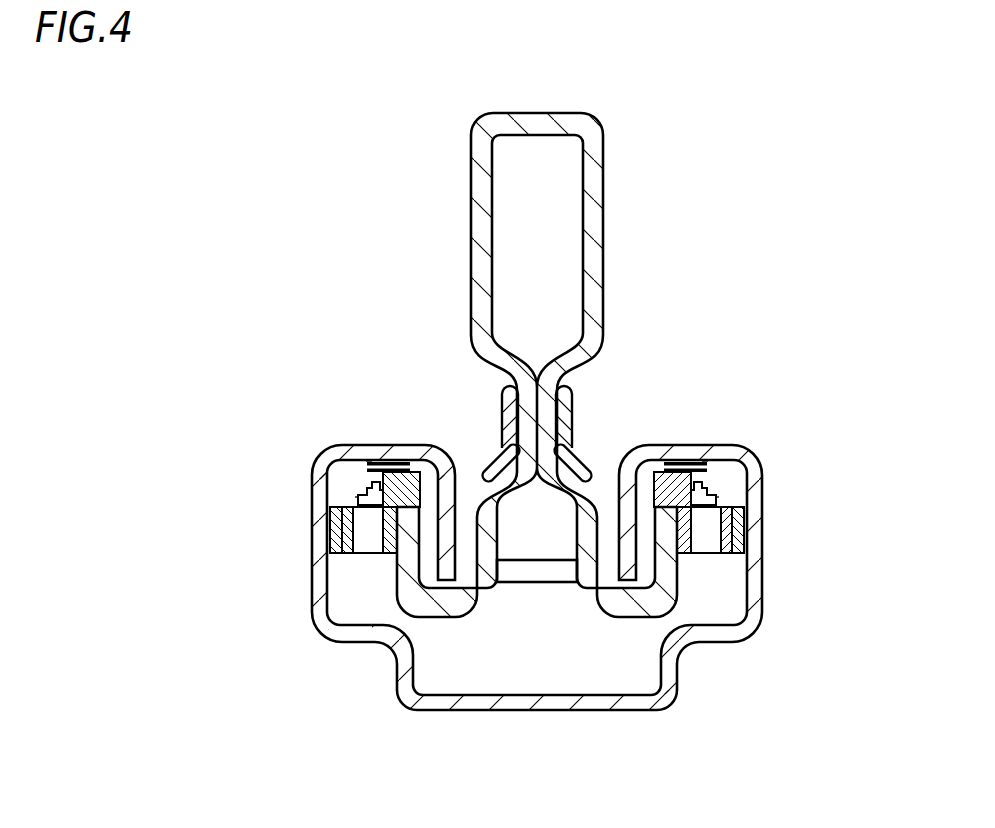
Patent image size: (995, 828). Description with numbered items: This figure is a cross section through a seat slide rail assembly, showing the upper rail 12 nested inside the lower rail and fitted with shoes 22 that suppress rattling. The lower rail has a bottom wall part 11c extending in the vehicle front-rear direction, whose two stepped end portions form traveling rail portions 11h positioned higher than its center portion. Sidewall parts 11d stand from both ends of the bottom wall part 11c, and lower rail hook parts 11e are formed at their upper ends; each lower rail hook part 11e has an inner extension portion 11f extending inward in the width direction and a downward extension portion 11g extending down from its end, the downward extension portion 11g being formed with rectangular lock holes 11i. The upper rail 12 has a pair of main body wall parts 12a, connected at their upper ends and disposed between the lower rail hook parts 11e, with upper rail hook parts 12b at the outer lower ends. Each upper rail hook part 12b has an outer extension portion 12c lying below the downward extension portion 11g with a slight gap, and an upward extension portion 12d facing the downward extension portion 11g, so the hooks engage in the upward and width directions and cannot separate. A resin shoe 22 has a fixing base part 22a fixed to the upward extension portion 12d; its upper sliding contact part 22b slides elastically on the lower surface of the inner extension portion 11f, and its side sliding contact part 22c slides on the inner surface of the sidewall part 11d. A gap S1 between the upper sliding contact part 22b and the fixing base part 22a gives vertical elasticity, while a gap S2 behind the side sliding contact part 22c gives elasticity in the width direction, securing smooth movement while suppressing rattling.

The upper rail 12 is at (606, 132).
The main body wall part 12a is at (604, 183).
The upper rail hook part 12b is at (415, 621).
The outer extension portion 12c is at (457, 621).
The upward extension portion 12d is at (335, 554).
The bottom wall part 11c is at (522, 711).
The sidewall part 11d is at (312, 565).
The lower rail hook part 11e is at (452, 470).
The inner extension portion 11f is at (368, 446).
The downward extension portion 11g is at (578, 600).
The traveling rail portion 11h is at (396, 645).
The lock hole 11i is at (456, 500).
The shoe 22 is at (328, 575).
The fixing base part 22a is at (367, 469).
The upper sliding contact part 22b is at (378, 478).
The side sliding contact part 22c is at (327, 532).
The gap S1 is at (368, 463).
The gap S2 is at (357, 497).